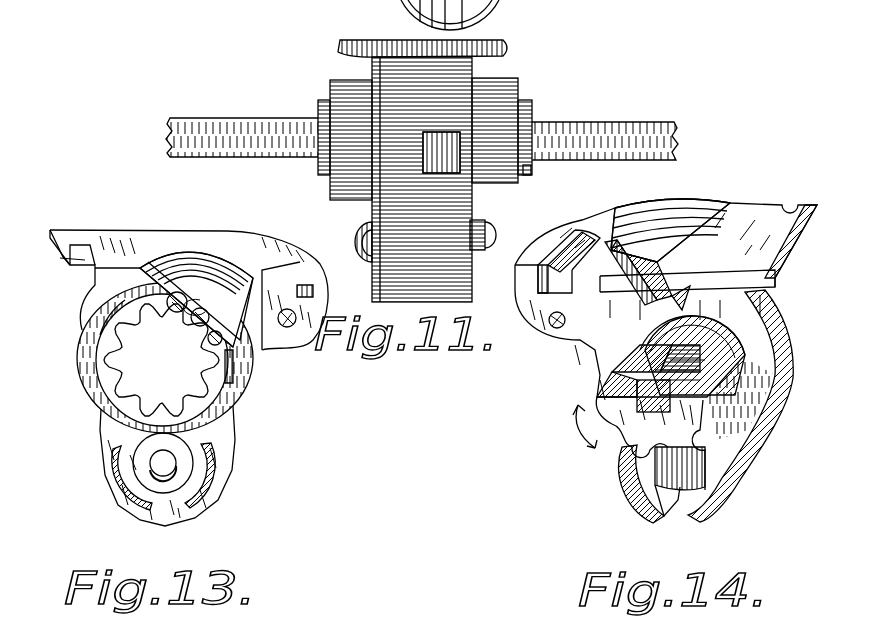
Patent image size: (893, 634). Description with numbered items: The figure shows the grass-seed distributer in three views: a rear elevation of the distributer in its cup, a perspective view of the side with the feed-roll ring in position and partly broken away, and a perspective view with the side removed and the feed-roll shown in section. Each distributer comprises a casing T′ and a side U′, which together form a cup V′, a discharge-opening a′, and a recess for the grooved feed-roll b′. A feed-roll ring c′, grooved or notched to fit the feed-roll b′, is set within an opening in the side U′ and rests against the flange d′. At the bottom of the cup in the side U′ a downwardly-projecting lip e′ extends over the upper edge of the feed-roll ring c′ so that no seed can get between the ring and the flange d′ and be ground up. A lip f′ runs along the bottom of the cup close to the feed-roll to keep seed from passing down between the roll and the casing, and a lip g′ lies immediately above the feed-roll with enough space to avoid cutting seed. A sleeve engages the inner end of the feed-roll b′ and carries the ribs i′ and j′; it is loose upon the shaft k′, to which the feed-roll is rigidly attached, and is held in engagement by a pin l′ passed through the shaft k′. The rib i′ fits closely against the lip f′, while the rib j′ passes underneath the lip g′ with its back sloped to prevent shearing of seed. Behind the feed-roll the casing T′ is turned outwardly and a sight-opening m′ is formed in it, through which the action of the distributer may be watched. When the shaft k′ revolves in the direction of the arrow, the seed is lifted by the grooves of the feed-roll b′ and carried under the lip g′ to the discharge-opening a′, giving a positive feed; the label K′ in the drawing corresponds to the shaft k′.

In FIG. 11, the casing T′ is at (430, 38).
In FIG. 14, the casing T′ is at (750, 206).
In FIG. 11, the side U′ is at (372, 67).
In FIG. 13, the side U′ is at (92, 318).
In FIG. 13, the cup V′ is at (215, 272).
In FIG. 14, the cup V′ is at (633, 240).
In FIG. 11, the grooved feed-roll b′ is at (330, 98).
In FIG. 14, the grooved feed-roll b′ is at (600, 424).
In FIG. 11, the rib j′ is at (516, 78).
In FIG. 14, the rib j′ is at (722, 283).
In FIG. 11, the shaft k′ is at (522, 100).
In FIG. 14, the shaft k′ is at (640, 318).
In FIG. 11, the shaft K′ is at (620, 122).
In FIG. 14, the shaft K′ is at (637, 370).
In FIG. 11, the pin l′ is at (532, 170).
In FIG. 11, the sight-opening m′ is at (443, 170).
In FIG. 14, the sight-opening m′ is at (780, 388).
In FIG. 13, the downwardly-projecting lip e′ is at (196, 320).
In FIG. 13, the feed-roll ring c′ is at (120, 368).
In FIG. 13, the flange d′ is at (236, 378).
In FIG. 14, the rib i′ is at (655, 310).
In FIG. 14, the lip g′ is at (680, 300).
In FIG. 14, the lip f′ is at (618, 346).
In FIG. 14, the discharge-opening a′ is at (680, 462).